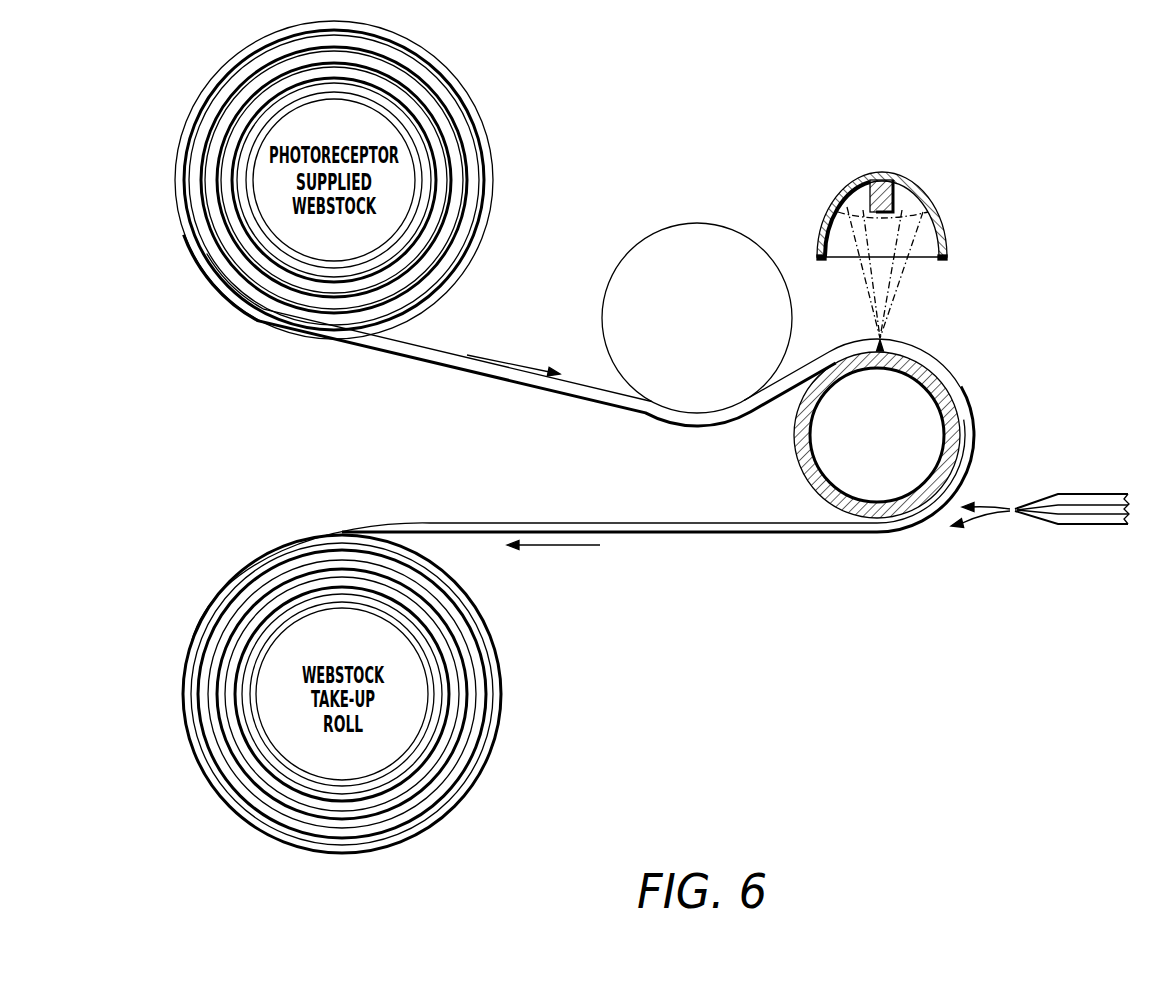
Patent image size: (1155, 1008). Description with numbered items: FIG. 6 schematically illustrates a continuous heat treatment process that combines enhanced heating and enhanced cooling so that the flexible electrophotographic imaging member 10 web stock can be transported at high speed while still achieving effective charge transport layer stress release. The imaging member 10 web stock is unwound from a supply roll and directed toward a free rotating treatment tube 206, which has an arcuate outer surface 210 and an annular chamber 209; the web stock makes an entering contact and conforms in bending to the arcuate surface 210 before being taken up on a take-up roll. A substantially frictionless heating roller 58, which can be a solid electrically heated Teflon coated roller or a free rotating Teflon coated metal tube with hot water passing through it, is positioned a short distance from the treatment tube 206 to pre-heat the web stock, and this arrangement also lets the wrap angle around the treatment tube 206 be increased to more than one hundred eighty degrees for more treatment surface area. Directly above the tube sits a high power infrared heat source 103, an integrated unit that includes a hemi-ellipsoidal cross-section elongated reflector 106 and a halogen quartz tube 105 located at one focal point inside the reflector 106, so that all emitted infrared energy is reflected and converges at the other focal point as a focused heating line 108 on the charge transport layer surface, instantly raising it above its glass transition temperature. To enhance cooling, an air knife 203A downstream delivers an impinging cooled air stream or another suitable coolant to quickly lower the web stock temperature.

The imaging member 10 is at (460, 378).
The heating roller 58 is at (648, 242).
The heat source 103 is at (863, 240).
The halogen quartz tube 105 is at (886, 178).
The reflector 106 is at (922, 196).
The focused heating line 108 is at (881, 356).
The tube 206 is at (840, 428).
The annular chamber 209 is at (852, 462).
The arcuate outer surface 210 is at (938, 388).
The air knife 203A is at (1032, 534).